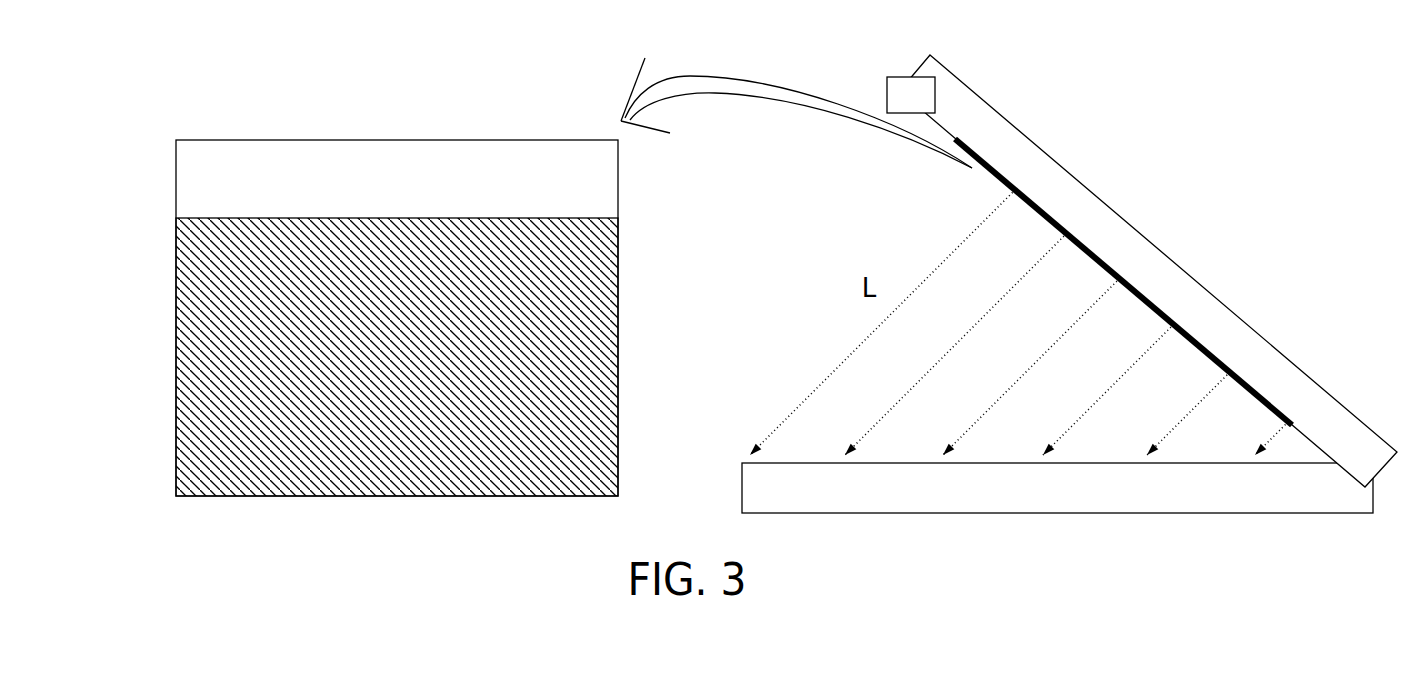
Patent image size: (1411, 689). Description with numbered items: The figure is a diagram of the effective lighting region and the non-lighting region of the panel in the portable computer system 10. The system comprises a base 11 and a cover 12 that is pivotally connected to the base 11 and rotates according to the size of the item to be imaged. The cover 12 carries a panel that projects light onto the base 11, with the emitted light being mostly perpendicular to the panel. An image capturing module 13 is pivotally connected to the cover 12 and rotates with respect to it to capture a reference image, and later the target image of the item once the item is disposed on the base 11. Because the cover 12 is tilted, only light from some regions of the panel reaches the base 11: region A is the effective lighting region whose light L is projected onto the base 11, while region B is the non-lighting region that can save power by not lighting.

The portable computer system 10 is at (1107, 249).
The base 11 is at (742, 490).
The cover 12 is at (1277, 377).
The image capturing module 13 is at (887, 85).